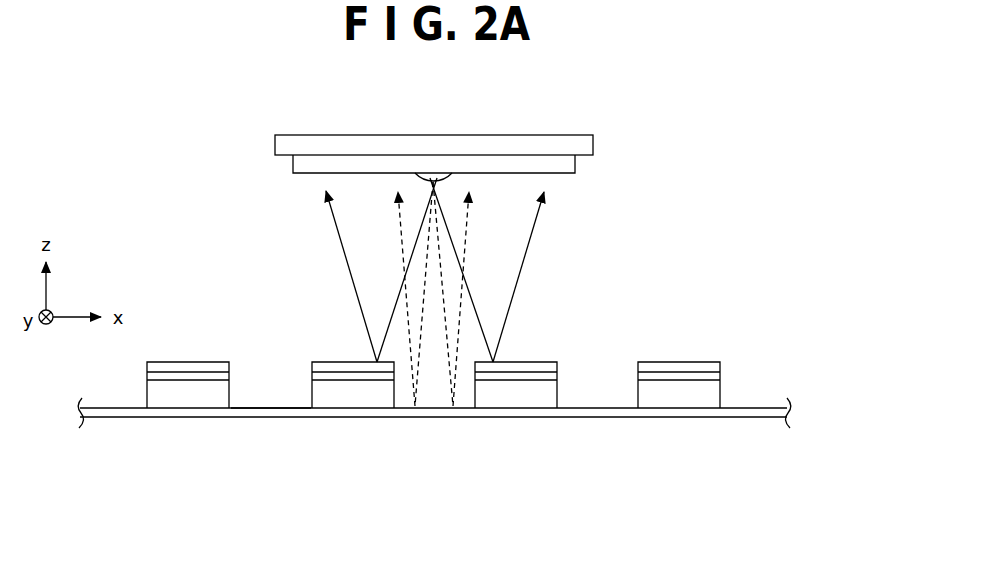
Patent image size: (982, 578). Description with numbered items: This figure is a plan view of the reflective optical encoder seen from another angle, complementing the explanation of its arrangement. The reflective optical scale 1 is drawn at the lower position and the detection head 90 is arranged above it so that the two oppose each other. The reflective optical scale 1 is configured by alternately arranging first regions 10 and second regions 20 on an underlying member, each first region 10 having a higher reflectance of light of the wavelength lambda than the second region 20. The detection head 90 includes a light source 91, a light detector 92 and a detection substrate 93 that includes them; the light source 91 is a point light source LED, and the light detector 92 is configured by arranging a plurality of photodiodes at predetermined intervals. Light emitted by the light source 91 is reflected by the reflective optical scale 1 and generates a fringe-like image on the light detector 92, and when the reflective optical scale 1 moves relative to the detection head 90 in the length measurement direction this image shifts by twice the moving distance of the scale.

The reflective optical scale 1 is at (705, 333).
The first region 10 is at (147, 340).
The second region 20 is at (312, 357).
The detection head 90 is at (547, 114).
The light source 91 is at (434, 178).
The light detector 92 is at (575, 164).
The detection substrate 93 is at (593, 146).